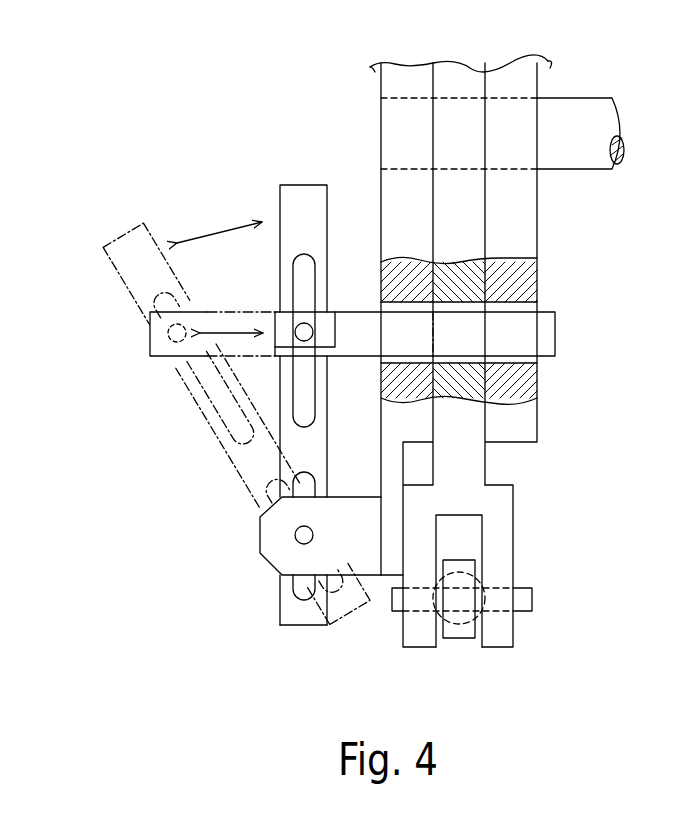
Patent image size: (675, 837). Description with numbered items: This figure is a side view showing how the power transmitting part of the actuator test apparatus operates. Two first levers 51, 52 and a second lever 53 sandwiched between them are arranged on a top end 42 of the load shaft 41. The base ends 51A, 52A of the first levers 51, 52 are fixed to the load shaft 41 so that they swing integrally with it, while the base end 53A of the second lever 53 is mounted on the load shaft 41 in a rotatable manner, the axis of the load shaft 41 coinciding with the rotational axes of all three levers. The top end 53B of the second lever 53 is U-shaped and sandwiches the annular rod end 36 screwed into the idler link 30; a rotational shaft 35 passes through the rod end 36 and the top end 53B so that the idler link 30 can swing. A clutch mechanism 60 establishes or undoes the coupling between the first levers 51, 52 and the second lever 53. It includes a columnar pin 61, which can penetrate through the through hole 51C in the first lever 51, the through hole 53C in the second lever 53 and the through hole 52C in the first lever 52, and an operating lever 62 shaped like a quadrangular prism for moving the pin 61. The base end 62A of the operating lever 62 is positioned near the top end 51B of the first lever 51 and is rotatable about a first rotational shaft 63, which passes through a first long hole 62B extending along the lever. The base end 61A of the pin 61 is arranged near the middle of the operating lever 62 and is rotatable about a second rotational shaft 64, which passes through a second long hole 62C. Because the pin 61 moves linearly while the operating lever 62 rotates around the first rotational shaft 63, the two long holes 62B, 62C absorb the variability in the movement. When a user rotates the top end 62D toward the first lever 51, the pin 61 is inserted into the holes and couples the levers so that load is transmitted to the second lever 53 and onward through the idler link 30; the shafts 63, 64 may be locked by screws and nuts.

The idler link 30 is at (432, 602).
The rotational shaft 35 is at (532, 600).
The rod end 36 is at (457, 638).
The load shaft 41 is at (593, 97).
The top end of the load shaft 42 is at (380, 135).
The first lever 51 is at (380, 203).
The base end of the first lever 51A is at (380, 77).
The top end of the first lever 51B is at (383, 578).
The through hole 51C is at (380, 362).
The first lever 52 is at (538, 417).
The base end of the first lever 52A is at (537, 68).
The through hole 52C is at (513, 313).
The second lever 53 is at (487, 457).
The base end of the second lever 53A is at (433, 70).
The top end of the second lever 53B is at (513, 533).
The through hole 53C is at (473, 350).
The clutch mechanism 60 is at (168, 130).
The pin 61 is at (557, 332).
The base end of the pin 61A is at (153, 358).
The operating lever 62 is at (280, 203).
The base end of the operating lever 62A is at (343, 617).
The first long hole 62B is at (277, 478).
The second long hole 62C is at (297, 287).
The top end of the operating lever 62D is at (280, 187).
The first rotational shaft 63 is at (295, 535).
The second rotational shaft 64 is at (310, 332).